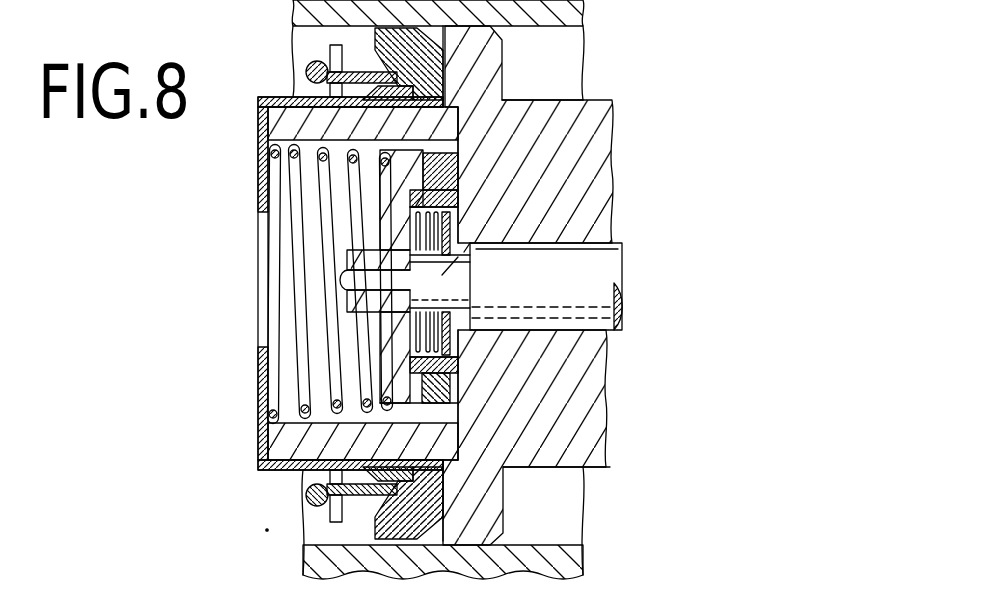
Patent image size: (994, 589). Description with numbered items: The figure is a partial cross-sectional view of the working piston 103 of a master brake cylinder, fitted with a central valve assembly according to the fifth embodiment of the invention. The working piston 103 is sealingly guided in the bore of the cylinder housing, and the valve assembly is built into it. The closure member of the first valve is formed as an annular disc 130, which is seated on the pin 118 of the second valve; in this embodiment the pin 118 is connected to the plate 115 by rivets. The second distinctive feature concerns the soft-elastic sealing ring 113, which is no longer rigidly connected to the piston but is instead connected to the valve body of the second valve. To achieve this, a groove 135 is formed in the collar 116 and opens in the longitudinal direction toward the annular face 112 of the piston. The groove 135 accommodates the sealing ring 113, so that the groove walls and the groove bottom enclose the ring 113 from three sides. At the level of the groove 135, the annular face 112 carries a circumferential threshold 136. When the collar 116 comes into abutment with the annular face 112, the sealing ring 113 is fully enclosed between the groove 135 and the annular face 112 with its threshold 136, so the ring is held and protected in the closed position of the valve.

The working piston 103 is at (590, 137).
The annular face 112 is at (462, 195).
The soft-elastic sealing ring 113 is at (458, 403).
The plate 115 is at (258, 243).
The collar 116 is at (400, 148).
The pin 118 is at (585, 243).
The annular disc 130 is at (458, 335).
The groove 135 is at (503, 78).
The circumferential threshold 136 is at (557, 100).